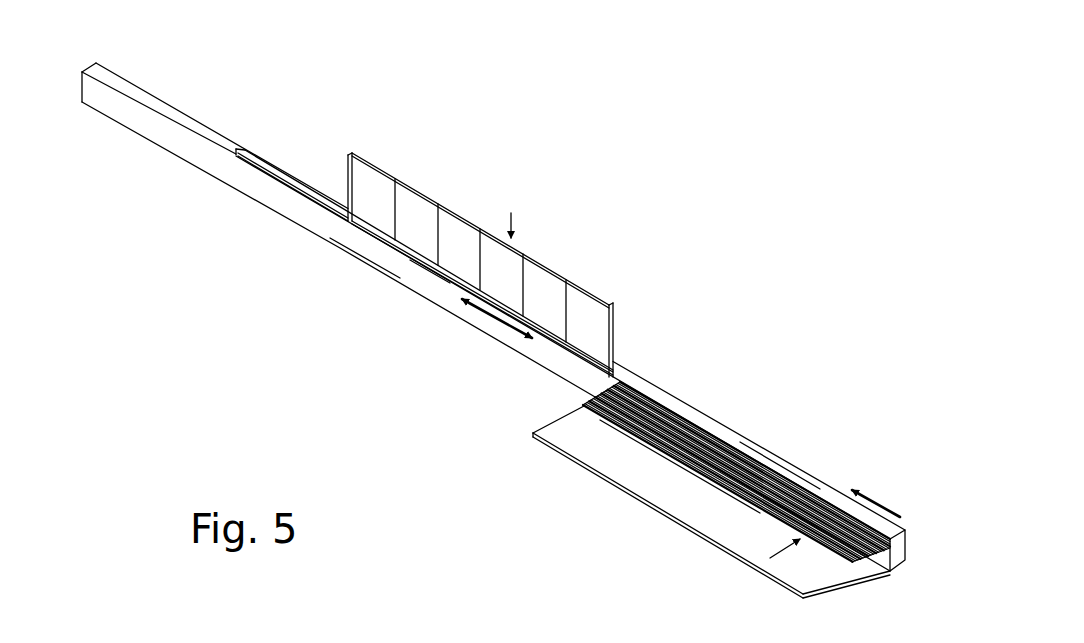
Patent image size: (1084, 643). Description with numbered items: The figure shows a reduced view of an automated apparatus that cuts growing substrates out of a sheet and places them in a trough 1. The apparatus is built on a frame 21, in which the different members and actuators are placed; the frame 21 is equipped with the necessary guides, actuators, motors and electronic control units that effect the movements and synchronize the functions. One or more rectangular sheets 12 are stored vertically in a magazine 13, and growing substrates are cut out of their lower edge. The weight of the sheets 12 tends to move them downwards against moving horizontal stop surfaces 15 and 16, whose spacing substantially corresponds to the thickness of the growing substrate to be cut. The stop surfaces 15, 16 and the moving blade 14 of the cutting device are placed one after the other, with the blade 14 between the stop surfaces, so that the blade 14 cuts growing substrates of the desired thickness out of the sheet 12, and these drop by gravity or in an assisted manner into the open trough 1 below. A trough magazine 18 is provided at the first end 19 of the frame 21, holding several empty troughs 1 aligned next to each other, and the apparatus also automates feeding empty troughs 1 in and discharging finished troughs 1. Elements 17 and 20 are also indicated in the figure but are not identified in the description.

The trough 1 is at (430, 272).
The sheet 12 is at (372, 175).
The magazine 13 is at (347, 172).
The moving blade 14 is at (500, 307).
The stop surface 15 is at (290, 182).
The stop surface 16 is at (692, 420).
The web edge 17 is at (780, 465).
The trough magazine 18 is at (678, 497).
The first end 19 is at (825, 488).
The rail 20 is at (138, 91).
The frame 21 is at (368, 257).